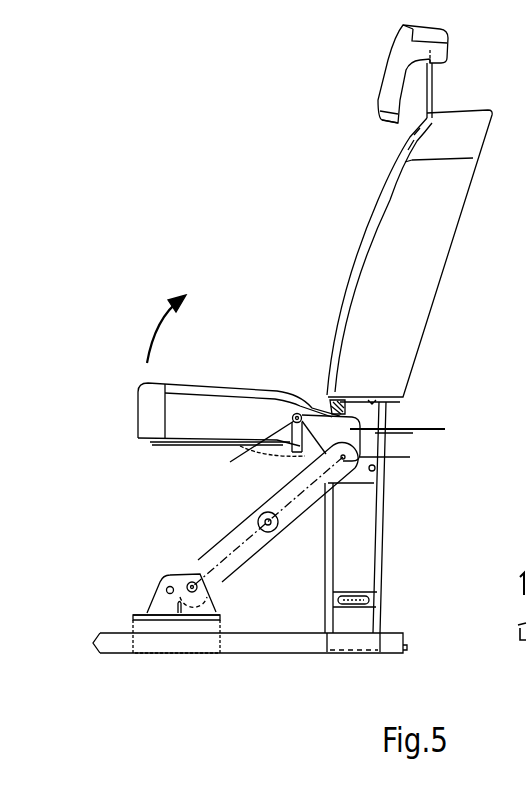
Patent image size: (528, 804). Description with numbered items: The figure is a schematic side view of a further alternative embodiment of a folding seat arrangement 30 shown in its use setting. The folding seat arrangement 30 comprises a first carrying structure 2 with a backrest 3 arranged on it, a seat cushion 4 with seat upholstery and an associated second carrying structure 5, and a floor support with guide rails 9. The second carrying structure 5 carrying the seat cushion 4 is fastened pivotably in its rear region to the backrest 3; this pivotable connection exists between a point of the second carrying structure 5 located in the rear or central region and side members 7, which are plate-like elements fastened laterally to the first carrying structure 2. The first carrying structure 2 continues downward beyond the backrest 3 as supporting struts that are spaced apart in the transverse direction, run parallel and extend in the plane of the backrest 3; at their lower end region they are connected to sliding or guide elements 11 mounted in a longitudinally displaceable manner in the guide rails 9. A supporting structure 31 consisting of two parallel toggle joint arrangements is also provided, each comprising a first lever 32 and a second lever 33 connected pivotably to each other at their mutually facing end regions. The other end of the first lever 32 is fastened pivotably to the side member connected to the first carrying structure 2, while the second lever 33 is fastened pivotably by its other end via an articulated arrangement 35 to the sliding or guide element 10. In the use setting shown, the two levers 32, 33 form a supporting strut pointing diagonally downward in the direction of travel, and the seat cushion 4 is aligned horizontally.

The first carrying structure 2 is at (383, 418).
The backrest 3 is at (408, 277).
The seat cushion 4 is at (219, 431).
The second carrying structure 5 is at (155, 442).
The side members 7 is at (414, 431).
The guide rails 9 is at (280, 653).
The sliding or guide element 10 is at (143, 623).
The sliding or guide elements 11 is at (372, 643).
The folding seat arrangement 30 is at (228, 188).
The supporting structure 31 is at (227, 541).
The first lever 32 is at (275, 514).
The second lever 33 is at (237, 571).
The articulated arrangement 35 is at (192, 585).